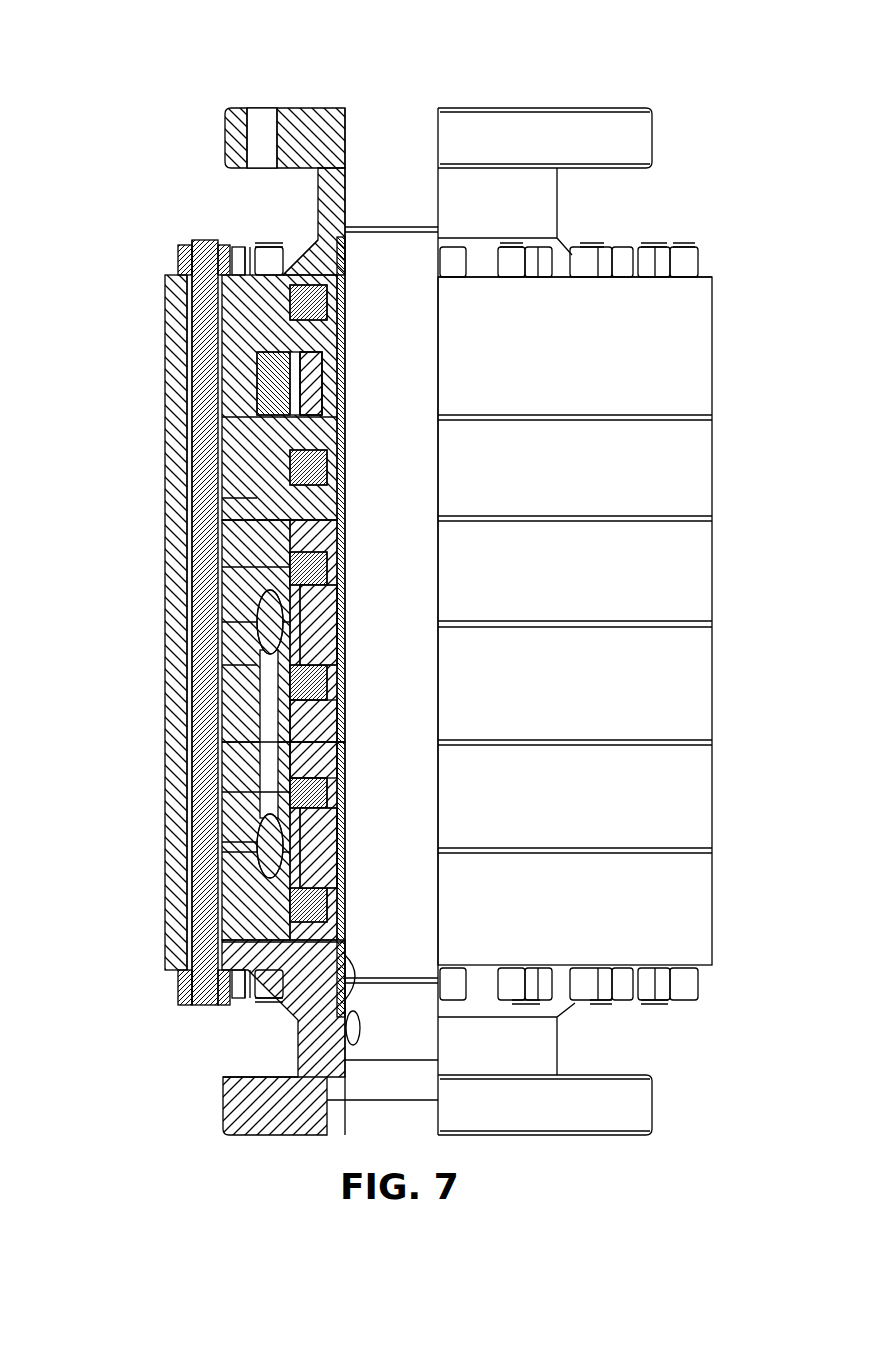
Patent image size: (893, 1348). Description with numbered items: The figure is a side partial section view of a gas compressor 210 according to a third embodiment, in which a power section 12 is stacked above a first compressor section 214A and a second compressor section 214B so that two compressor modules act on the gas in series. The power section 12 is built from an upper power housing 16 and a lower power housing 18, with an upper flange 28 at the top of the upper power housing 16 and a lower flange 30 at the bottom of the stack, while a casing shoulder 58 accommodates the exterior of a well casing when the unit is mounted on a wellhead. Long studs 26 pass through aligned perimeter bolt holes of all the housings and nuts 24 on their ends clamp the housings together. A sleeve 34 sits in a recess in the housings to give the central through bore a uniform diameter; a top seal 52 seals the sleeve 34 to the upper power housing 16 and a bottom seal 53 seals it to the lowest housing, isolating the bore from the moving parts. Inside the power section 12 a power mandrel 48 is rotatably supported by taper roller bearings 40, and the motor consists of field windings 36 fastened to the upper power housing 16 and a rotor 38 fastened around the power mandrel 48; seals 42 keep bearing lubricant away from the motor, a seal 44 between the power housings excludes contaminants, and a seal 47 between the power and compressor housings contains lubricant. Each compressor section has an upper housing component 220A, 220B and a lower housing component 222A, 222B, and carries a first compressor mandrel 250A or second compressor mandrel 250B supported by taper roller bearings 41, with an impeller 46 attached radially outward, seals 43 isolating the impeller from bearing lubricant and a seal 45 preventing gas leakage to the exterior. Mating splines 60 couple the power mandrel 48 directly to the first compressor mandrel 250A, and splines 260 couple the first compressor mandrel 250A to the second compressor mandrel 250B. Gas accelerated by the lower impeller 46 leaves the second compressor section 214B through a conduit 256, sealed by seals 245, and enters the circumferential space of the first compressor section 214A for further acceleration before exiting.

The gas compressor 210 is at (730, 90).
The power section 12 is at (777, 108).
The first compressor section 214A is at (777, 528).
The second compressor section 214B is at (777, 750).
The upper flange 28 is at (232, 138).
The sleeve 34 is at (316, 222).
The top seal 52 is at (312, 248).
The long studs 26 is at (276, 262).
The nuts 24 is at (182, 252).
The taper roller bearings 40 is at (222, 278).
The power mandrel 48 is at (262, 292).
The upper power housing 16 is at (168, 352).
The lower power housing 18 is at (168, 480).
The seals 42 is at (300, 302).
The field windings 36 is at (265, 372).
The rotor 38 is at (302, 398).
The seal 44 is at (235, 424).
The seal 47 is at (238, 512).
The mating splines 60 is at (250, 545).
The lower housing component 222A is at (292, 722).
The lower housing component 222B is at (292, 920).
The seals 43 is at (300, 612).
The upper housing component 220A is at (295, 600).
The upper housing component 220B is at (295, 825).
The seals 245 is at (262, 765).
The impeller 46 is at (262, 622).
The seal 45 is at (240, 665).
The taper roller bearings 41 is at (235, 567).
The conduit 256 is at (330, 735).
The splines 260 is at (340, 752).
The first compressor mandrel 250A is at (342, 632).
The second compressor mandrel 250B is at (342, 860).
The casing shoulder 58 is at (333, 1082).
The lower flange 30 is at (247, 1117).
The bottom seal 53 is at (297, 1020).